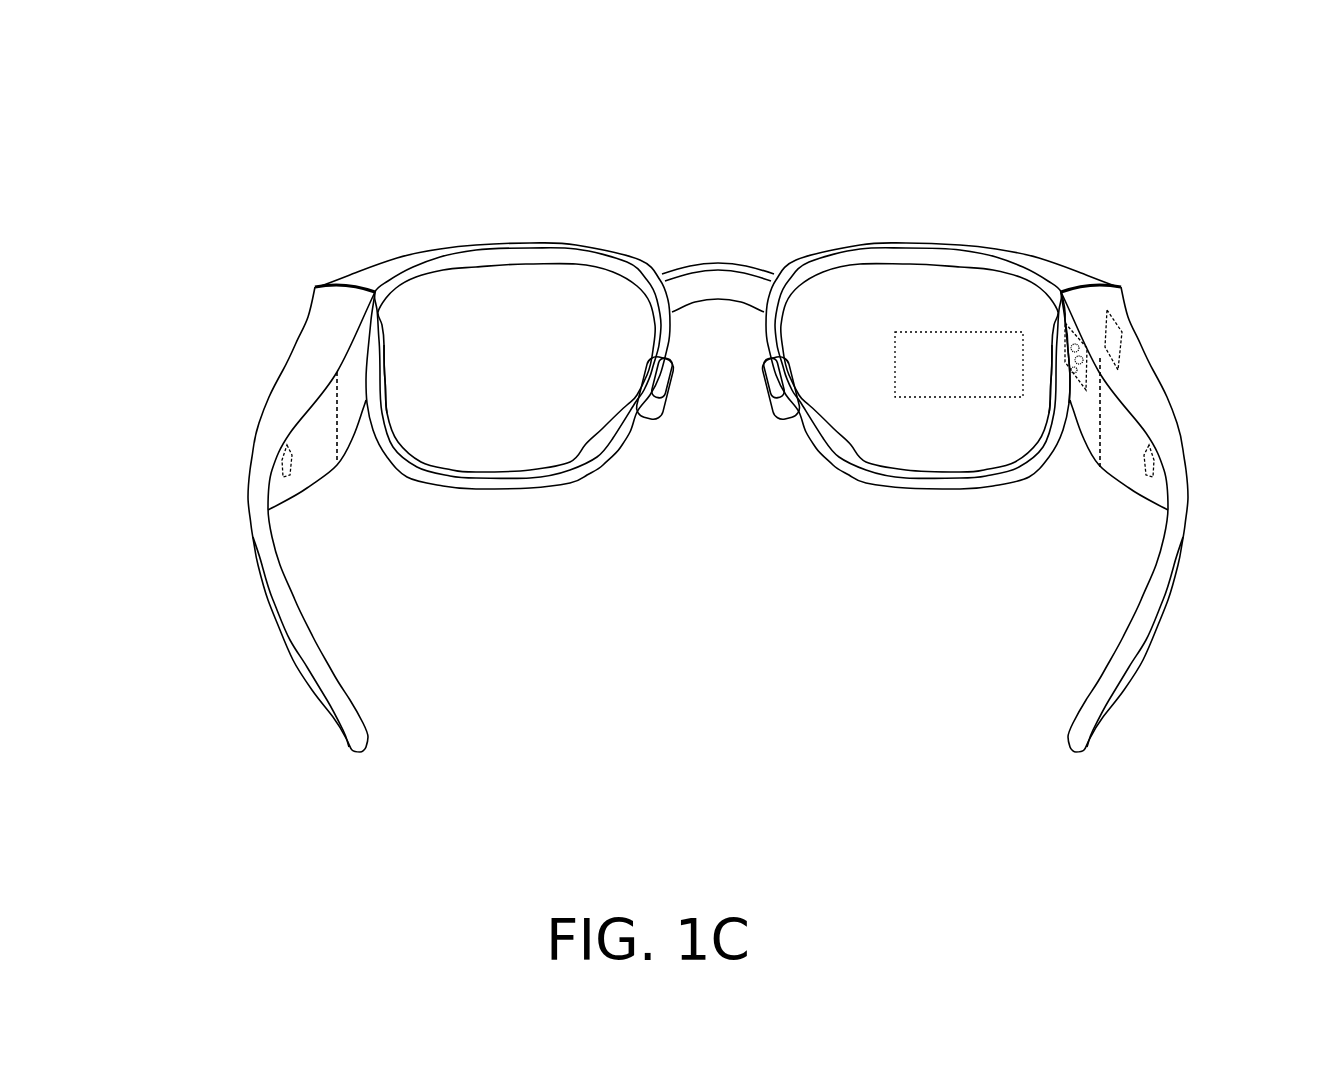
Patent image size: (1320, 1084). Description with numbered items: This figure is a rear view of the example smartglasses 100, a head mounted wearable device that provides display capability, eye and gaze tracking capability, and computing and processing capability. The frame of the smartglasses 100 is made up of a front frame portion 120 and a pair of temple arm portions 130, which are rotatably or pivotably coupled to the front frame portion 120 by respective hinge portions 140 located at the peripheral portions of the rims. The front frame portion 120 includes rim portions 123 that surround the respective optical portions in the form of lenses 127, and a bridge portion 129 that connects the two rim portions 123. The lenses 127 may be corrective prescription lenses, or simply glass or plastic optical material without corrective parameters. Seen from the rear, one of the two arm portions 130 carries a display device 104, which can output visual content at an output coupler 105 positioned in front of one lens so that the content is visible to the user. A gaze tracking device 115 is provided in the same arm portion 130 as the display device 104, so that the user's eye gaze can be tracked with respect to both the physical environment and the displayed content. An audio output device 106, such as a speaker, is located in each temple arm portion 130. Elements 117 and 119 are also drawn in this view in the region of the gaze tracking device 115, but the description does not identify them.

The smartglasses 100 is at (221, 159).
The display device 104 is at (1122, 329).
The output coupler 105 is at (887, 355).
The audio output device 106 is at (288, 470).
The gaze tracking device 115 is at (1058, 334).
The infrared emitter 117 is at (1095, 357).
The eye scanner region 119 is at (1085, 347).
The front frame portion 120 is at (571, 246).
The rim portions 123 is at (550, 487).
The lenses 127 is at (477, 442).
The bridge portion 129 is at (723, 285).
The temple arm portions 130 is at (247, 459).
The hinge portions 140 is at (317, 289).